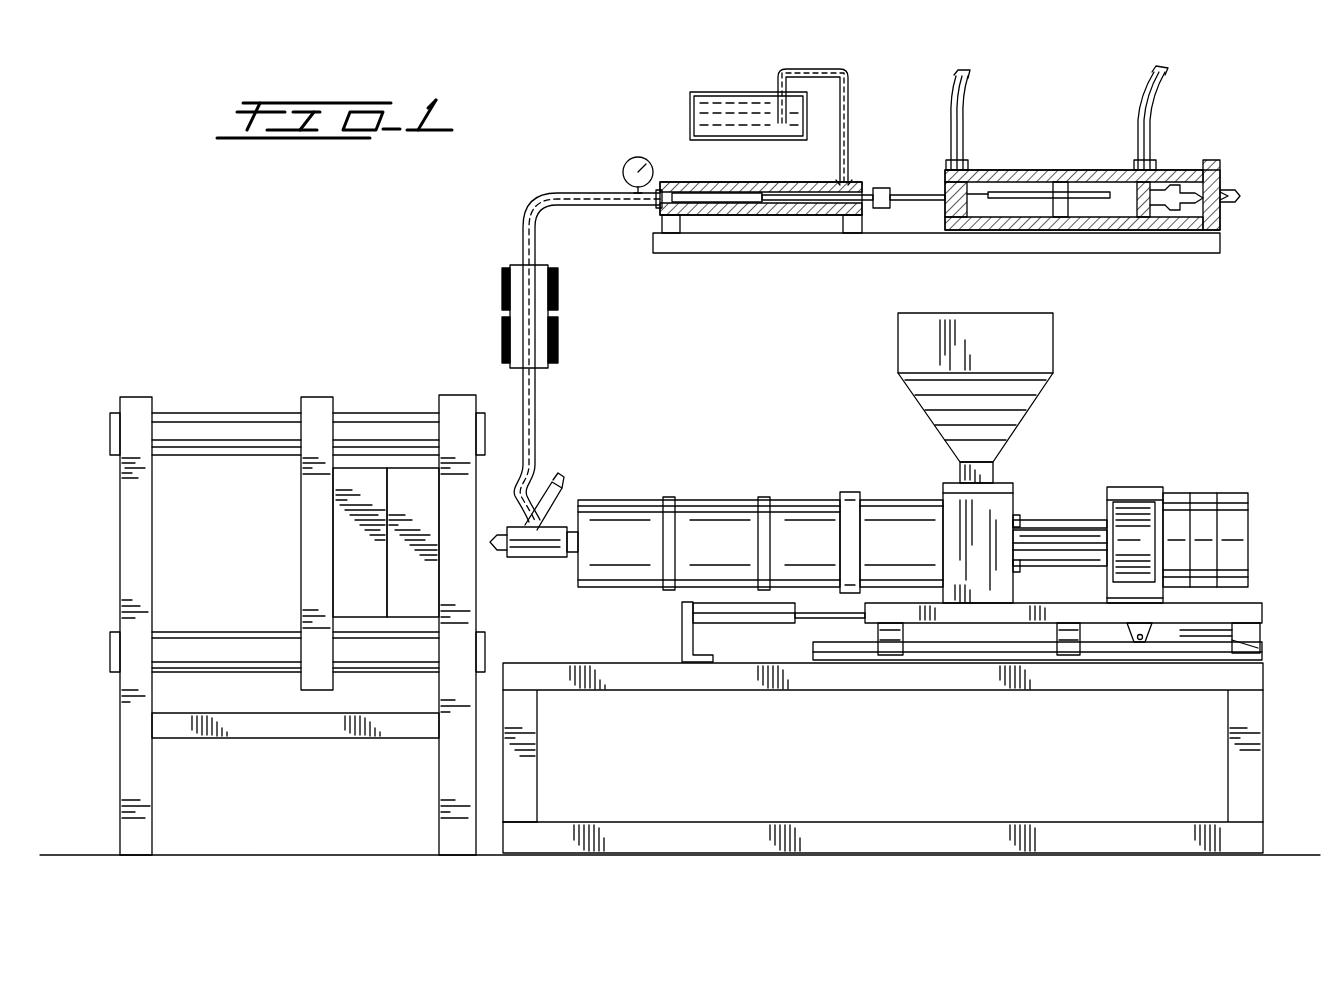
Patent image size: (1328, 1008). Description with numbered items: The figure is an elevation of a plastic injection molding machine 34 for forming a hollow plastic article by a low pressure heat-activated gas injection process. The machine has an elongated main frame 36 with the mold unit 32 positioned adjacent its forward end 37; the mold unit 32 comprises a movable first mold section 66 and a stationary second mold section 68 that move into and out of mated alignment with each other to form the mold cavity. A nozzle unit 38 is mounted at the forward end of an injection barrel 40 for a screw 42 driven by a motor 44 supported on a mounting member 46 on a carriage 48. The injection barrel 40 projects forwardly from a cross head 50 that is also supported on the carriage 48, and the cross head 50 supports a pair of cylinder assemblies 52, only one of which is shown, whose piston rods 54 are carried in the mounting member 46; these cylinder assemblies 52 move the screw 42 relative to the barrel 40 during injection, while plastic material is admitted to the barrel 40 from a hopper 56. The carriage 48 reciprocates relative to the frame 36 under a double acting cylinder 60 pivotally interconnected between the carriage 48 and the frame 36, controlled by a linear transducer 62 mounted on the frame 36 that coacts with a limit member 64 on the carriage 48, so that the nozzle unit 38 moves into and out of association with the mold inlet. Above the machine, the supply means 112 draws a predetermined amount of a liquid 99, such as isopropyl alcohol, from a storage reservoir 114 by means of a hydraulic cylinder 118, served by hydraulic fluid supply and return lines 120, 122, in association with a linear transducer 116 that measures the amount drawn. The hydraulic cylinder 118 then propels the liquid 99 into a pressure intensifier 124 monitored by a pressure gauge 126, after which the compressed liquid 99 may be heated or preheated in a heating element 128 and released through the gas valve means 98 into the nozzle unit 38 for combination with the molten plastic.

The mold unit 32 is at (363, 397).
The molding machine 34 is at (412, 302).
The main frame 36 is at (888, 810).
The forward end 37 is at (503, 822).
The nozzle unit 38 is at (558, 508).
The injection barrel 40 is at (625, 500).
The screw 42 is at (1030, 520).
The motor 44 is at (1200, 493).
The mounting member 46 is at (1128, 487).
The carriage 48 is at (1250, 603).
The cross head 50 is at (1000, 483).
The cylinder assemblies 52 is at (893, 500).
The piston rods 54 is at (1060, 530).
The hopper 56 is at (1053, 340).
The double acting cylinder 60 is at (1258, 650).
The linear transducer 62 is at (773, 623).
The limit member 64 is at (862, 618).
The first mold section 66 is at (345, 527).
The second mold section 68 is at (421, 595).
The gas valve means 98 is at (513, 512).
The liquid 99 is at (735, 118).
The supply means 112 is at (740, 262).
The storage reservoir 114 is at (745, 140).
The linear transducer 116 is at (1112, 200).
The hydraulic cylinder 118 is at (1032, 228).
The hydraulic fluid supply line 120 is at (965, 122).
The hydraulic fluid return line 122 is at (1140, 120).
The pressure intensifier 124 is at (775, 215).
The pressure gauge 126 is at (629, 161).
The heating element 128 is at (562, 283).